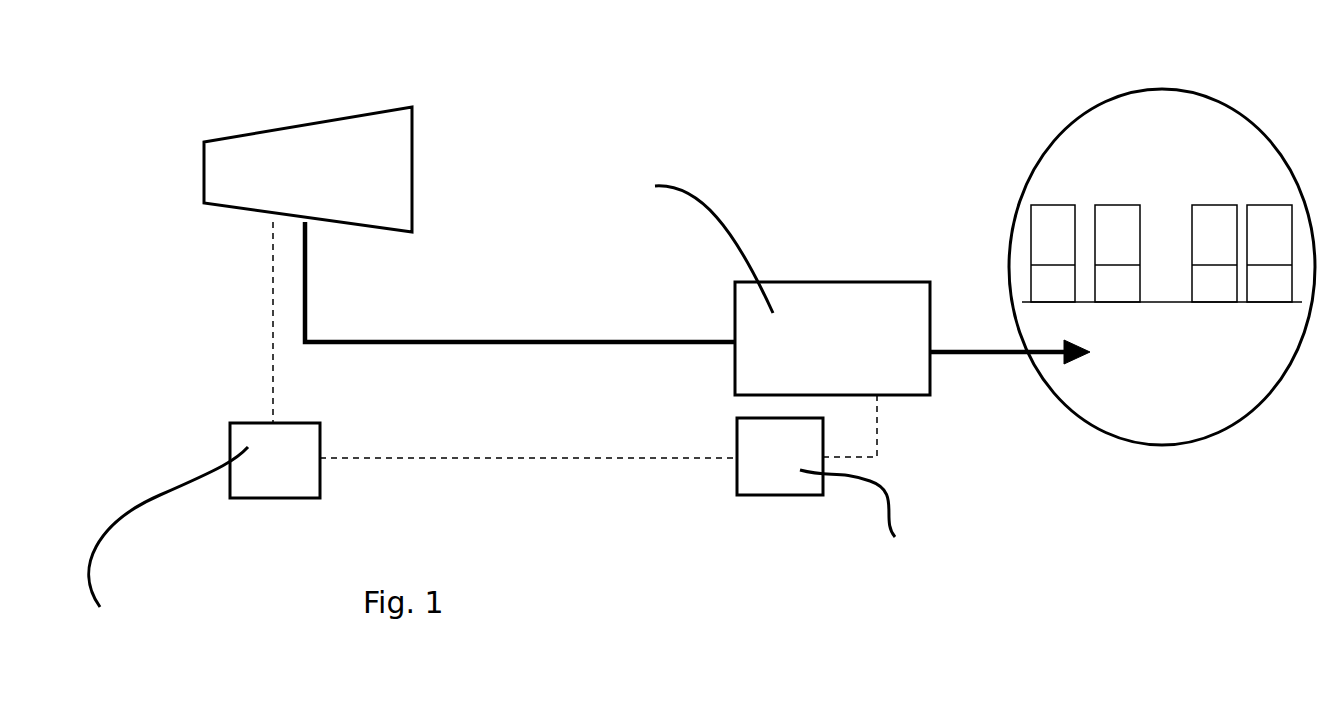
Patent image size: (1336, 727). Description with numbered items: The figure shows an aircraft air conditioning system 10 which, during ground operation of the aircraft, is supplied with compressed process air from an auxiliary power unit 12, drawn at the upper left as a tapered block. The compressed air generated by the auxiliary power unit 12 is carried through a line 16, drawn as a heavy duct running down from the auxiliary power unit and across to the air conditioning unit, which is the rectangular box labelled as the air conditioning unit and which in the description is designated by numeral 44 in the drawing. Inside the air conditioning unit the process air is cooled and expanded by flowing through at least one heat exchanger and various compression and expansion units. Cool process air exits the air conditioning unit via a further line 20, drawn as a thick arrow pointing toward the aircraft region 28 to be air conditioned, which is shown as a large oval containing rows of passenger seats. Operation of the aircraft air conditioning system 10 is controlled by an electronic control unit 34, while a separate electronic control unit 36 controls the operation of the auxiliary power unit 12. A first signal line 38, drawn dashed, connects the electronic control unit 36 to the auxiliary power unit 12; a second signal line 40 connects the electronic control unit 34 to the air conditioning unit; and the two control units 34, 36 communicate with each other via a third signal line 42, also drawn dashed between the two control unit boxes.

The aircraft air conditioning system 10 is at (848, 100).
The auxiliary power unit 12 is at (278, 153).
The line 16 is at (513, 337).
The further line 20 is at (965, 365).
The aircraft region 28 is at (1203, 120).
The electronic control unit 34 is at (788, 483).
The electronic control unit 36 is at (266, 482).
The first signal line 38 is at (273, 270).
The second signal line 40 is at (877, 446).
The third signal line 42 is at (527, 462).
The air conditioning unit 44 is at (804, 305).